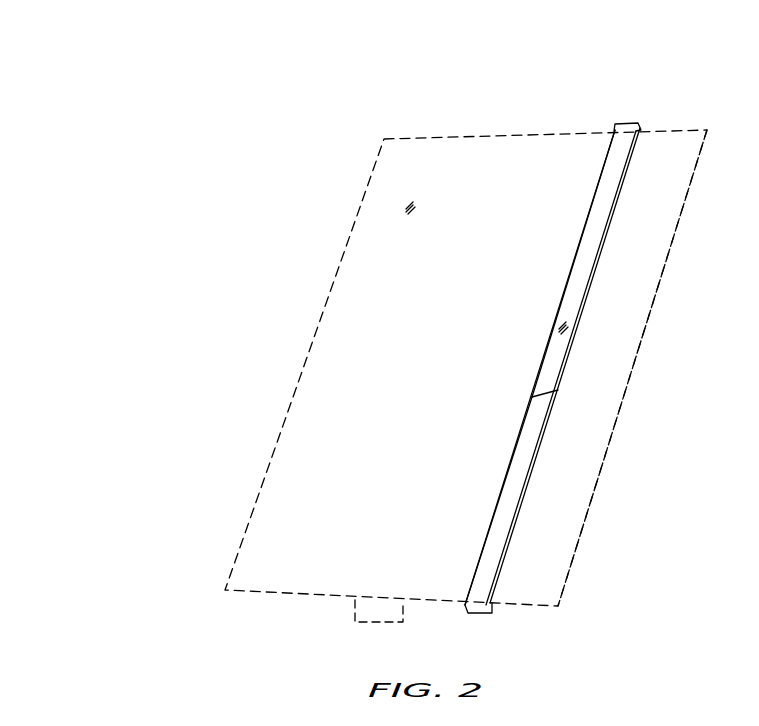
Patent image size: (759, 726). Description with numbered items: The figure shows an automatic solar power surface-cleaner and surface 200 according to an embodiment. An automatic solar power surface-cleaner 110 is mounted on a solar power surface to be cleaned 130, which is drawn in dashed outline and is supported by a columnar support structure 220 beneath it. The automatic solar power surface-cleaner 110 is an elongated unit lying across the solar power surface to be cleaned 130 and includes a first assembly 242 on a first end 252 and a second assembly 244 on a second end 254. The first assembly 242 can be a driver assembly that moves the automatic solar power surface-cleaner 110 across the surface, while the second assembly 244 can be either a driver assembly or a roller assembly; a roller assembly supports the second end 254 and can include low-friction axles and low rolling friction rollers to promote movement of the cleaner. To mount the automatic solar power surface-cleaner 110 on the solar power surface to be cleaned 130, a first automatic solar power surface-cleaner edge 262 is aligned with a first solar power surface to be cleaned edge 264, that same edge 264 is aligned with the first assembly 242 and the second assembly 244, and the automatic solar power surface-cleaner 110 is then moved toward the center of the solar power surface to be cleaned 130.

The automatic solar power surface-cleaner and surface 200 is at (102, 48).
The solar power surface to be cleaned 130 is at (382, 187).
The automatic solar power surface-cleaner 110 is at (575, 300).
The first assembly 242 is at (618, 125).
The second assembly 244 is at (463, 604).
The first end 252 is at (618, 157).
The second end 254 is at (487, 568).
The first automatic solar power surface-cleaner edge 262 is at (532, 397).
The first solar power surface to be cleaned edge 264 is at (604, 463).
The columnar support structure 220 is at (366, 623).